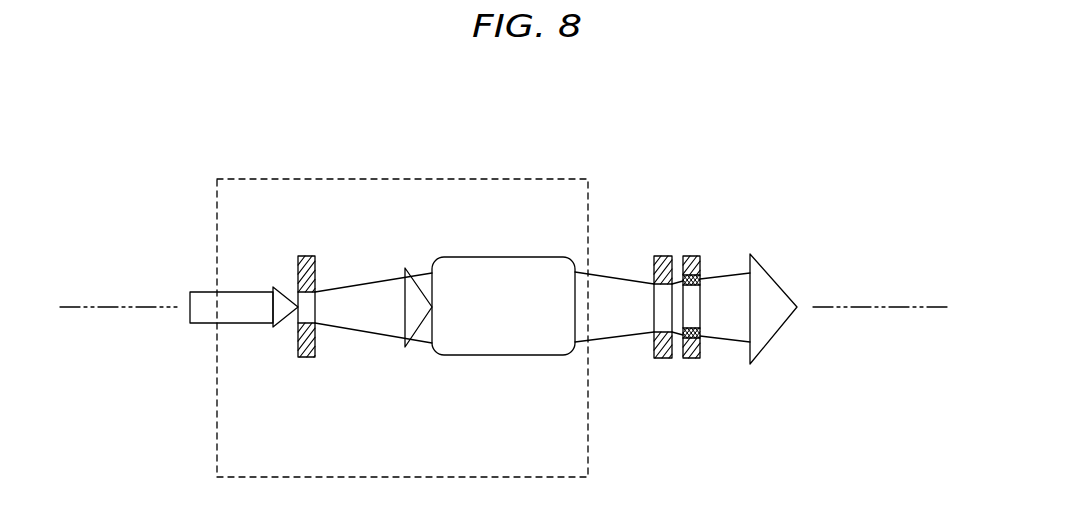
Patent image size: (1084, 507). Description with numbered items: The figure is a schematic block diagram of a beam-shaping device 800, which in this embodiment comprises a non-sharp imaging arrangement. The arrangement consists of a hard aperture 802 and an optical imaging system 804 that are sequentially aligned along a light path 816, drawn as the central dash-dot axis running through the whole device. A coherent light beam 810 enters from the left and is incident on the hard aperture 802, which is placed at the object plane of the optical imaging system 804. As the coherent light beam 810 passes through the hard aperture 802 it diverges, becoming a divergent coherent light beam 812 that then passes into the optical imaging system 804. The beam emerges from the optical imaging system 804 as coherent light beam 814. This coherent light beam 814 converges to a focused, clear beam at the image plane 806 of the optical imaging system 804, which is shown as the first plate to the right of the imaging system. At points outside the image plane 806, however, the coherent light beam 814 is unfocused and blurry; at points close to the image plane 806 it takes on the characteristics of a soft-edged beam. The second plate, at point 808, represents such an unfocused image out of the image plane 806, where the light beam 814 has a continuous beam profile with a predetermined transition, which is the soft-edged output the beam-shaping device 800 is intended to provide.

The beam-shaping device 800 is at (481, 179).
The hard aperture 802 is at (302, 358).
The optical imaging system 804 is at (515, 257).
The image plane 806 is at (663, 358).
The point outside the image plane 808 is at (690, 358).
The coherent light beam 810 is at (202, 292).
The divergent coherent light beam 812 is at (360, 283).
The coherent light beam 814 is at (612, 276).
The light path 816 is at (92, 306).